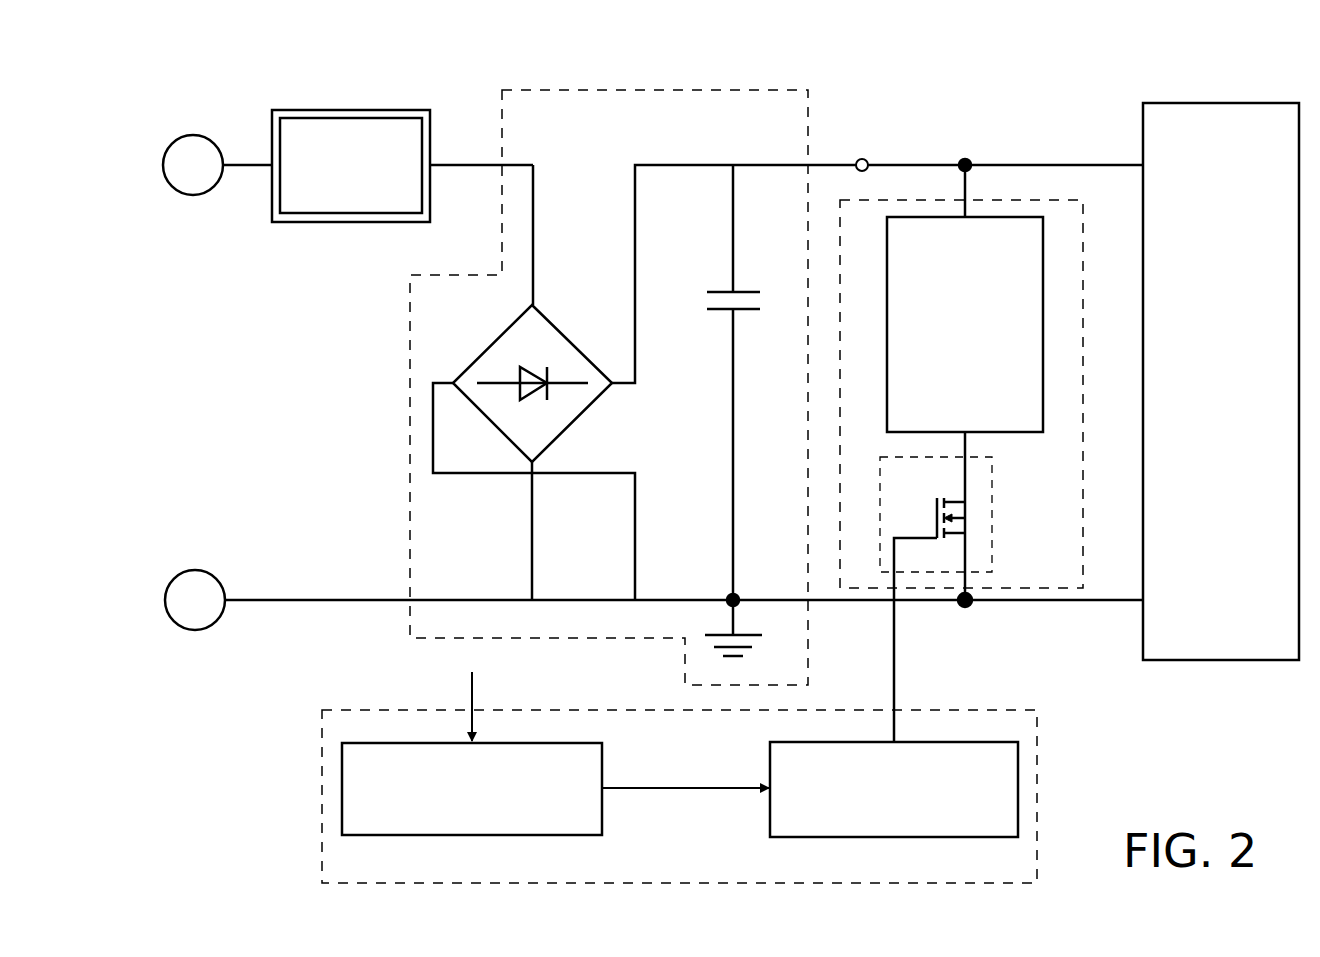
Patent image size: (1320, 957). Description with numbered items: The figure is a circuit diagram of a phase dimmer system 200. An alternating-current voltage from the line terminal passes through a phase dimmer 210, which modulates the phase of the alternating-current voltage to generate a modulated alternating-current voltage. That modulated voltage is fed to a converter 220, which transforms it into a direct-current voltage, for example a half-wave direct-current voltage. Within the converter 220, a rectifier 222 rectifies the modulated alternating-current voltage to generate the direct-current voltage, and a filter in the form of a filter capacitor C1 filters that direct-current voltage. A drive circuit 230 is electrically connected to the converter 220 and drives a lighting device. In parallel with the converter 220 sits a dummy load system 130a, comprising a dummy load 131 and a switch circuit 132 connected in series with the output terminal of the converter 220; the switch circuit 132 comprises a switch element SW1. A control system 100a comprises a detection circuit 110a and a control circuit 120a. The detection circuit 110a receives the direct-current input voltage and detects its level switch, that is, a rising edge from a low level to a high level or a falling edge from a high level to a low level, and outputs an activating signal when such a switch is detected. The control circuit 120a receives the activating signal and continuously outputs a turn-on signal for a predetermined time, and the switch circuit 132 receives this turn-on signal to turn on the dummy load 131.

The phase dimmer system 200 is at (1170, 758).
The phase dimmer 210 is at (355, 110).
The converter 220 is at (652, 90).
The rectifier 222 is at (565, 348).
The filter capacitor C1 is at (711, 382).
The dummy load system 130a is at (1010, 200).
The dummy load 131 is at (941, 373).
The switch circuit 132 is at (992, 515).
The switch element SW1 is at (936, 528).
The drive circuit 230 is at (1197, 403).
The control system 100a is at (322, 780).
The detection circuit 110a is at (440, 821).
The control circuit 120a is at (862, 821).